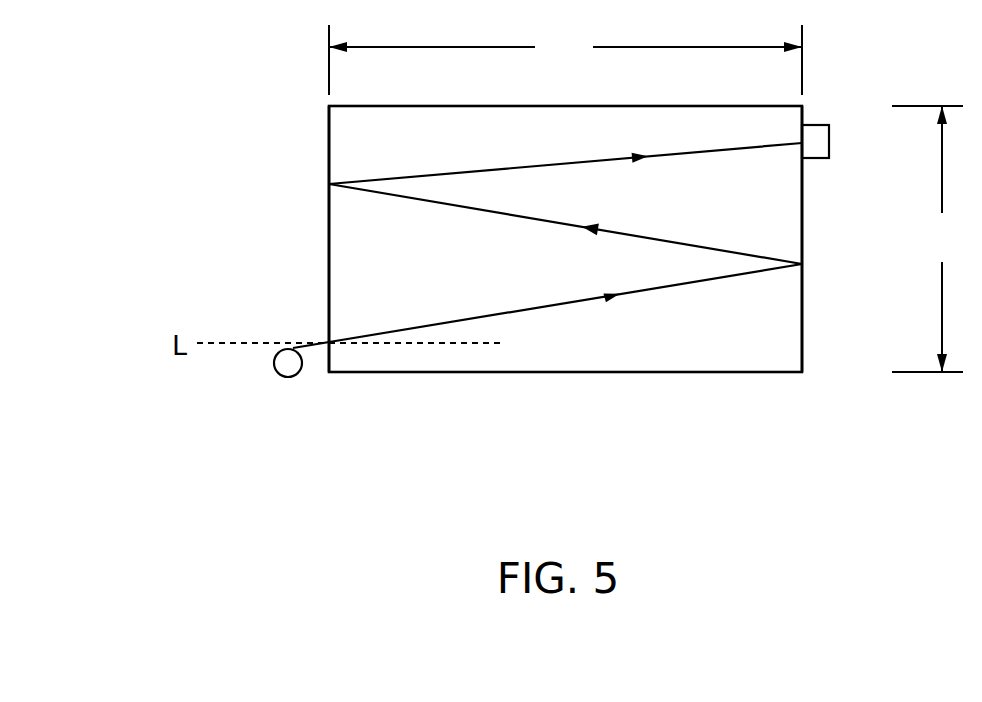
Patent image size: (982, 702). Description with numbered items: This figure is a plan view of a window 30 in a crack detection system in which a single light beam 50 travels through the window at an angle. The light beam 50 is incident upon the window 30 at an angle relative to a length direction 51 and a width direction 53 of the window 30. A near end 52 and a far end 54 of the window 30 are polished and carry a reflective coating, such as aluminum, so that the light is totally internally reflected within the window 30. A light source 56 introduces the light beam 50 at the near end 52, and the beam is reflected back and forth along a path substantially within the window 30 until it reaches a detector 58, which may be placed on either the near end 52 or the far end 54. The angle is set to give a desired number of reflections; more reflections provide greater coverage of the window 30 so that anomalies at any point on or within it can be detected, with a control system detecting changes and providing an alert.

The window 30 is at (565, 239).
The light beam 50 is at (453, 321).
The length direction 51 is at (565, 60).
The near end 52 is at (329, 135).
The width direction 53 is at (927, 239).
The far end 54 is at (802, 205).
The light source 56 is at (285, 377).
The detector 58 is at (829, 150).